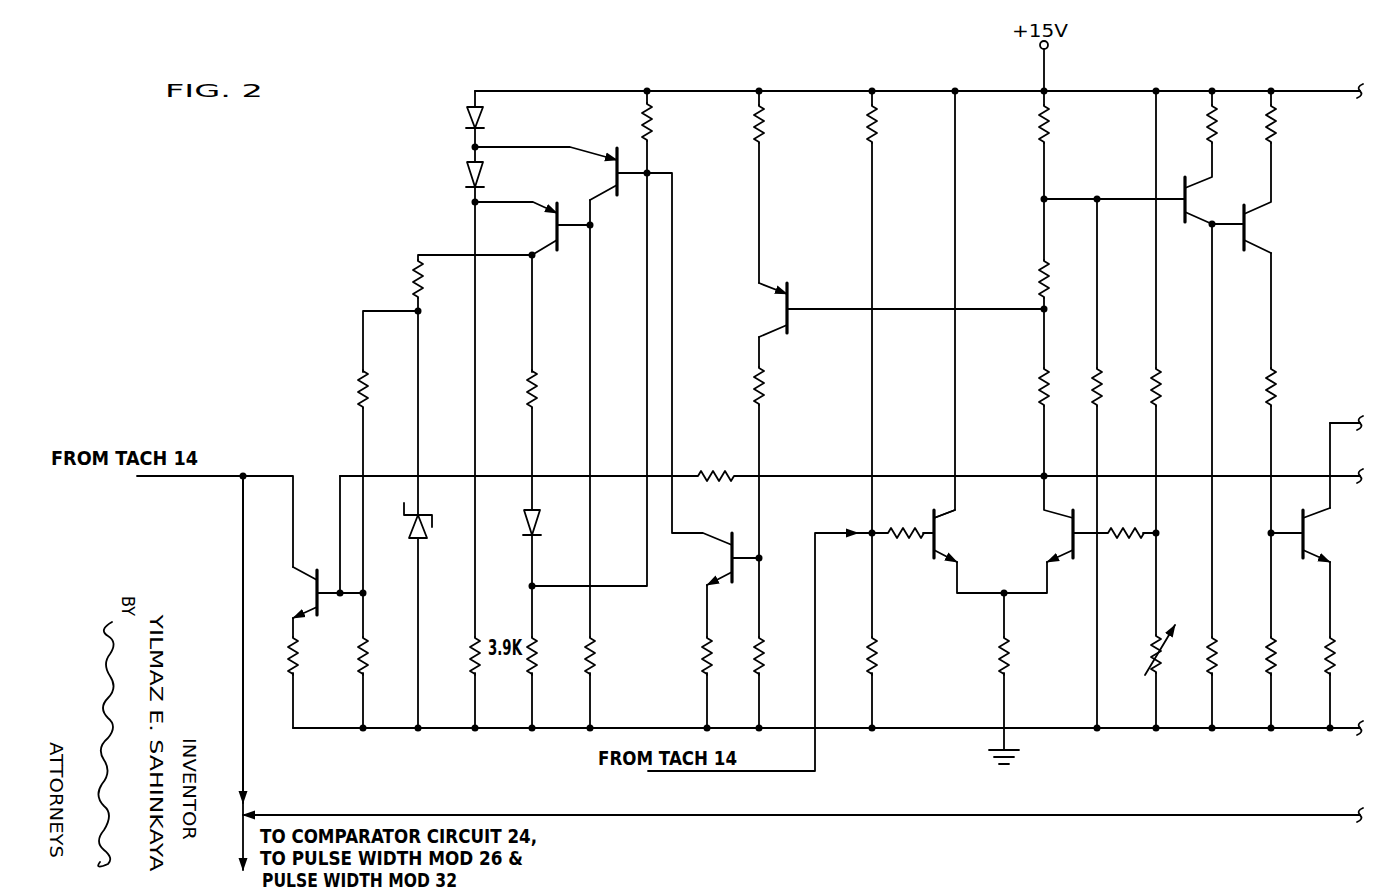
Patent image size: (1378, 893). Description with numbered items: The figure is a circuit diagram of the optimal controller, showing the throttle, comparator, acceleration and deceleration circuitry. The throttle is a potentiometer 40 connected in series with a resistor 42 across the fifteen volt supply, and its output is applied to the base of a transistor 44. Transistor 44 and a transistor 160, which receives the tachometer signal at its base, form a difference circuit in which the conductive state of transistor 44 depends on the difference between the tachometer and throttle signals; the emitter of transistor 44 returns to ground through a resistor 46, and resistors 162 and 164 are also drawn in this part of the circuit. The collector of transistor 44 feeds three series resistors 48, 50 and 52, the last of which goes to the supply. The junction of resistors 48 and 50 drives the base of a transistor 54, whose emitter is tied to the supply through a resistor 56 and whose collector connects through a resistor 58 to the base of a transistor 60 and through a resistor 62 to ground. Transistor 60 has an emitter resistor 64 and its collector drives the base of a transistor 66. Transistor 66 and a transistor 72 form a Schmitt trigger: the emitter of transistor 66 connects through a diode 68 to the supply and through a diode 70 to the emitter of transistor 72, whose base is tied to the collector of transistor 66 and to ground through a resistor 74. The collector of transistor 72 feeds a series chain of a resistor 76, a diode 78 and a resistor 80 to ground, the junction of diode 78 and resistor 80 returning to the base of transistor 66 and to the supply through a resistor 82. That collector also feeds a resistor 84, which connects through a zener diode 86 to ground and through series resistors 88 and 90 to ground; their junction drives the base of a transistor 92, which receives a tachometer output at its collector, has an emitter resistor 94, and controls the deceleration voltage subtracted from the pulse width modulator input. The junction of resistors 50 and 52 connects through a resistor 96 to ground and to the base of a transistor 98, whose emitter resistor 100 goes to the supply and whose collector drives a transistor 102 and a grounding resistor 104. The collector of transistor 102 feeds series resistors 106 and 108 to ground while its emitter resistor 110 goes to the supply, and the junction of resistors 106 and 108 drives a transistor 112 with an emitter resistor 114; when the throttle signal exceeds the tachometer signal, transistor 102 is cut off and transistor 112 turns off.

The potentiometer 40 is at (1154, 643).
The resistor 42 is at (1160, 382).
The transistor 44 is at (1064, 536).
The resistor 46 is at (1009, 649).
The resistor 48 is at (1051, 382).
The resistor 50 is at (1051, 278).
The resistor 52 is at (1051, 118).
The transistor 54 is at (782, 311).
The resistor 56 is at (766, 118).
The resistor 58 is at (766, 382).
The transistor 60 is at (724, 563).
The resistor 62 is at (763, 649).
The resistor 64 is at (711, 649).
The transistor 66 is at (612, 174).
The diode 68 is at (466, 114).
The diode 70 is at (466, 169).
The transistor 72 is at (554, 228).
The resistor 74 is at (595, 649).
The resistor 76 is at (536, 386).
The diode 78 is at (539, 519).
The resistor 80 is at (537, 649).
The resistor 82 is at (652, 117).
The resistor 84 is at (424, 279).
The zener diode 86 is at (416, 529).
The resistor 88 is at (370, 386).
The resistor 90 is at (370, 649).
The transistor 92 is at (310, 593).
The resistor 94 is at (298, 649).
The resistor 96 is at (1103, 382).
The transistor 98 is at (1189, 204).
The resistor 100 is at (1216, 118).
The transistor 102 is at (1256, 230).
The resistor 104 is at (1216, 649).
The resistor 106 is at (1277, 382).
The resistor 108 is at (1276, 649).
The resistor 110 is at (1276, 118).
The transistor 112 is at (1318, 535).
The resistor 114 is at (1333, 649).
The transistor 160 is at (938, 536).
The resistor 162 is at (878, 649).
The resistor 164 is at (877, 118).